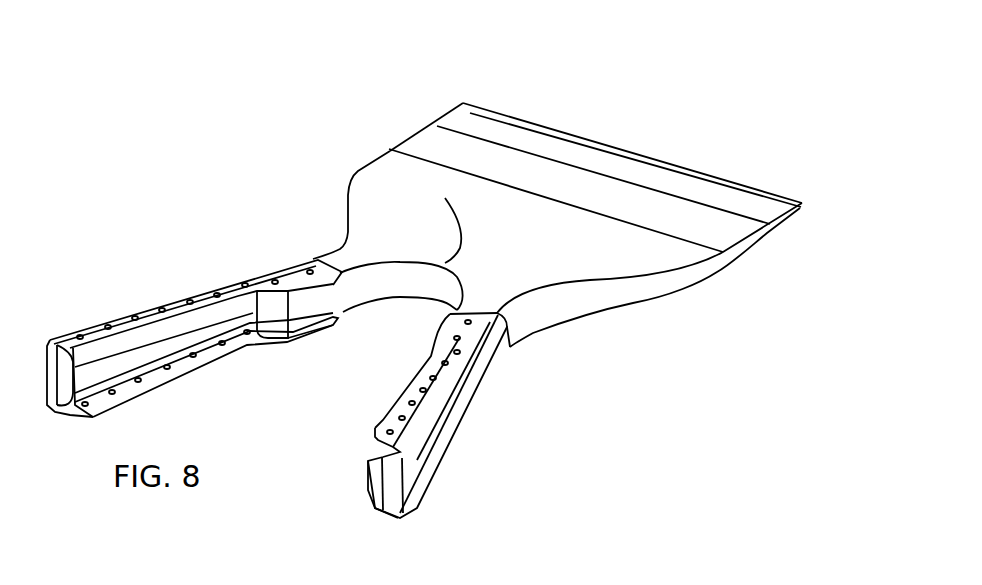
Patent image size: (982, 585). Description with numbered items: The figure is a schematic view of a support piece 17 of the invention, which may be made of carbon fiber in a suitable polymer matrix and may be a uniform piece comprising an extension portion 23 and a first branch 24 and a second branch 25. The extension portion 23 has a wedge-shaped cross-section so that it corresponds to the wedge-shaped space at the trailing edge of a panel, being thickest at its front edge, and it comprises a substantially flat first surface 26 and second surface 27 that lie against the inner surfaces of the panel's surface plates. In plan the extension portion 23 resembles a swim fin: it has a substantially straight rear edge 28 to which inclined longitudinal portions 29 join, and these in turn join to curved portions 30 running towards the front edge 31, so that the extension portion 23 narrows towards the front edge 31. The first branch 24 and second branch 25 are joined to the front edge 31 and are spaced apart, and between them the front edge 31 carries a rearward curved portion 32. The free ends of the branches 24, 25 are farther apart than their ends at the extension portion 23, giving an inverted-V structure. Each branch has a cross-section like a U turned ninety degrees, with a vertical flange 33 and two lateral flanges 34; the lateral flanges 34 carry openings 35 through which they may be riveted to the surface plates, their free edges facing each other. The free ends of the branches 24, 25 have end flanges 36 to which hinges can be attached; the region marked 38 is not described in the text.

The support piece 17 is at (302, 124).
The extension portion 23 is at (503, 240).
The first branch 24 is at (167, 210).
The second branch 25 is at (516, 416).
The first surface 26 is at (385, 178).
The second surface 27 is at (625, 324).
The rear edge 28 is at (620, 147).
The longitudinal portions 29 is at (413, 137).
The curved portions 30 is at (347, 196).
The front edge 31 is at (419, 325).
The rearward curved portion 32 is at (461, 232).
The vertical flange 33 is at (133, 345).
The lateral flanges 34 is at (170, 297).
The openings 35 is at (247, 285).
The end flanges 36 is at (66, 384).
The junction 38 is at (512, 344).